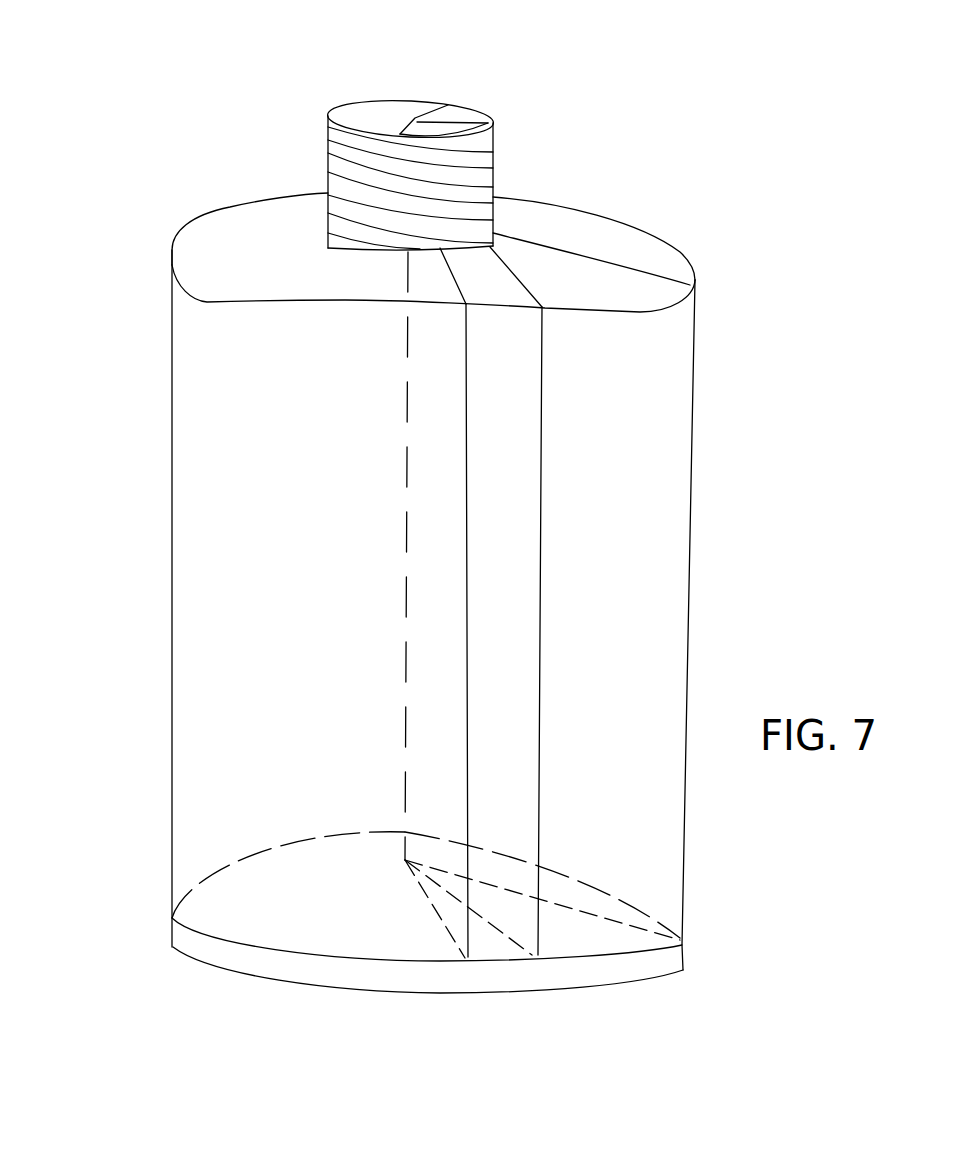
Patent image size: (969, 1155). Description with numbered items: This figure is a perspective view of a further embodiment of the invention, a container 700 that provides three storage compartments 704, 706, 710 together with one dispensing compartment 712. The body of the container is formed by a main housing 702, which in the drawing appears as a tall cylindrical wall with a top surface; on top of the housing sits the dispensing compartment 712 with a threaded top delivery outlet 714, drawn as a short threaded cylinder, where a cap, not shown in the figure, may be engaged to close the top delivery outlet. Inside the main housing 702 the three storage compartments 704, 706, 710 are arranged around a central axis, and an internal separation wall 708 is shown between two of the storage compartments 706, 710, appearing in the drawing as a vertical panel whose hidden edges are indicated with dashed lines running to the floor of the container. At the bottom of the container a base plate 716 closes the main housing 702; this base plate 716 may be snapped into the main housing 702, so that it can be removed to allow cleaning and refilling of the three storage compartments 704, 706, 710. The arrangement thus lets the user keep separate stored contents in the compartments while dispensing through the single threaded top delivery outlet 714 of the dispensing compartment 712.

The container 700 is at (730, 578).
The main housing 702 is at (172, 690).
The storage compartment 704 is at (580, 272).
The storage compartment 706 is at (503, 288).
The internal separation wall 708 is at (420, 267).
The storage compartment 710 is at (223, 275).
The dispensing compartment 712 is at (413, 97).
The threaded top delivery outlet 714 is at (490, 163).
The base plate 716 is at (238, 958).